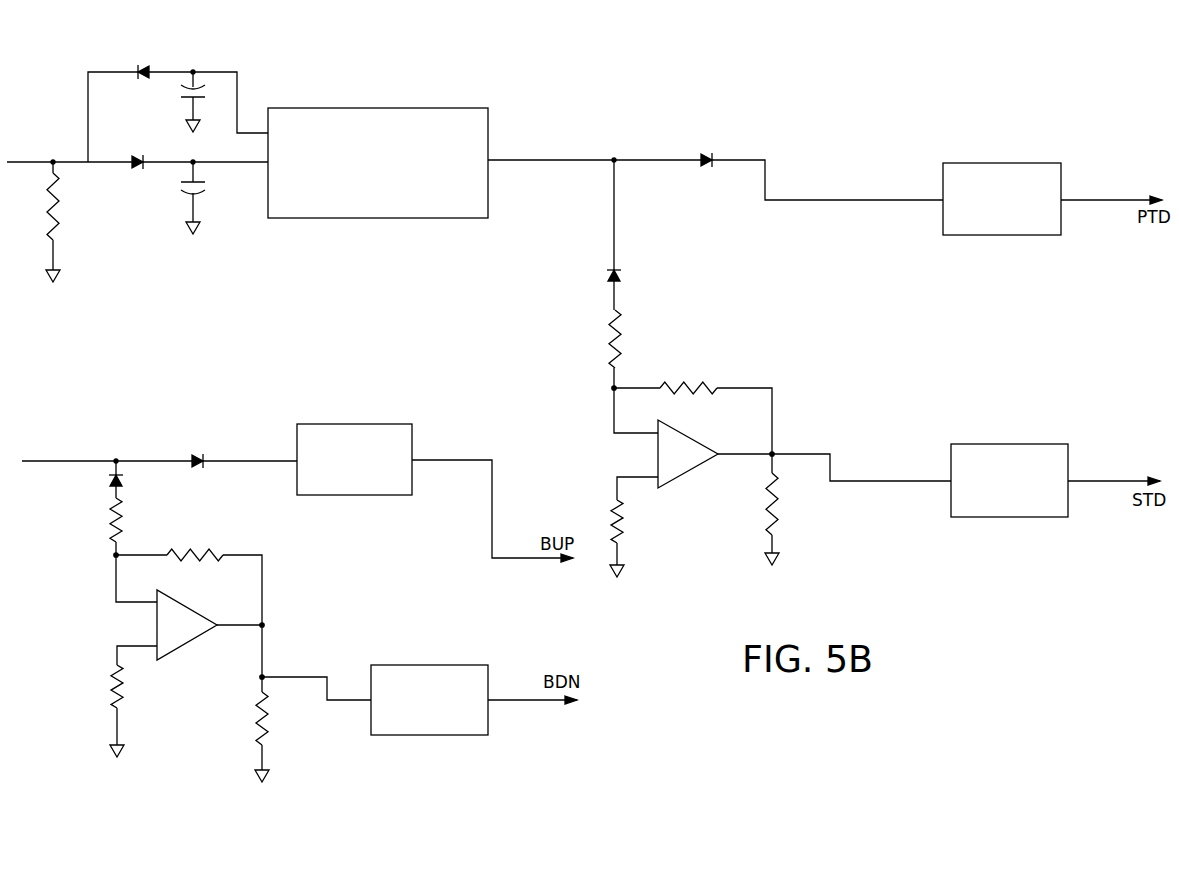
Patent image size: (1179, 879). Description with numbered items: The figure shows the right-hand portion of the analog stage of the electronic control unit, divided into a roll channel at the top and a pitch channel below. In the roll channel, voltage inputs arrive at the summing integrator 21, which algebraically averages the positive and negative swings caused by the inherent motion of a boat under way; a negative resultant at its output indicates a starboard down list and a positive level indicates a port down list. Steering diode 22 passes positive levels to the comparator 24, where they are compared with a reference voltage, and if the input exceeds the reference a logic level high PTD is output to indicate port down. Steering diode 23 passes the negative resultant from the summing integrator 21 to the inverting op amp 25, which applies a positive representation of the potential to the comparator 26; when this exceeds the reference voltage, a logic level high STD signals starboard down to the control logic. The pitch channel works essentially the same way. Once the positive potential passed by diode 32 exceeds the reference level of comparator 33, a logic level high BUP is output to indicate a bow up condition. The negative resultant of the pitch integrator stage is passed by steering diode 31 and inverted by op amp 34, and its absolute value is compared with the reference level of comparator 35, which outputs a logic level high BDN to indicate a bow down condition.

The summing integrator 21 is at (378, 163).
The steering diode 22 is at (706, 147).
The steering diode 23 is at (629, 277).
The comparator 24 is at (1002, 199).
The inverting op amp 25 is at (688, 454).
The comparator 26 is at (1009, 480).
The steering diode 31 is at (104, 482).
The diode 32 is at (201, 447).
The comparator 33 is at (354, 459).
The op amp 34 is at (187, 625).
The comparator 35 is at (429, 700).